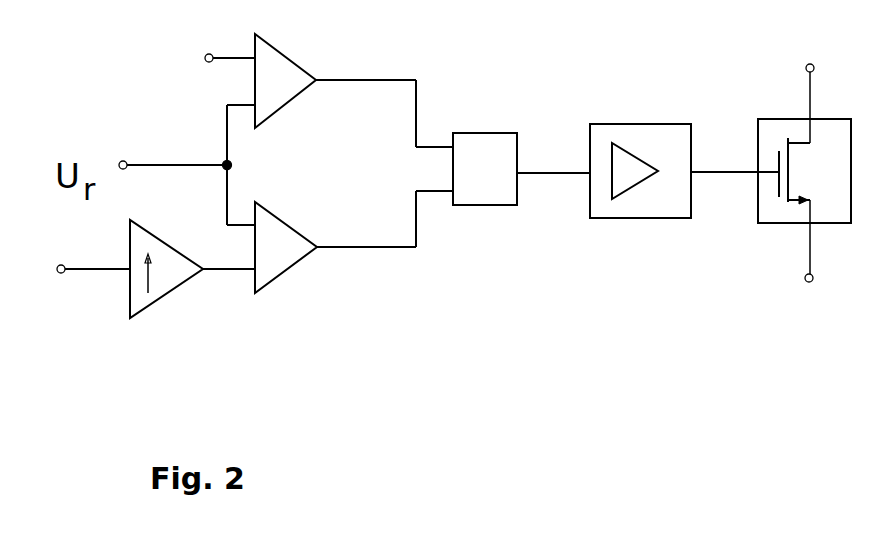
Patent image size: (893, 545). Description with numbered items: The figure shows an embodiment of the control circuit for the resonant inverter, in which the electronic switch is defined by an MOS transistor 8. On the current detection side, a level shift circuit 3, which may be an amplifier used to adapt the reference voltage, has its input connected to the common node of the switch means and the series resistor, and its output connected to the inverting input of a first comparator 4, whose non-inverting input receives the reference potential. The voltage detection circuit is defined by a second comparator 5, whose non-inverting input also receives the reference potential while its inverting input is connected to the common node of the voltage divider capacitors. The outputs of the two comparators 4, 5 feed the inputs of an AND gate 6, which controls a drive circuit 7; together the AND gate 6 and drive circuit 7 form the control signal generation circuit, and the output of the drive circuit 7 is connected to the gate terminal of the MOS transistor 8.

The level shift circuit 3 is at (167, 278).
The first comparator 4 is at (290, 245).
The second comparator 5 is at (290, 67).
The AND gate 6 is at (470, 143).
The drive circuit 7 is at (658, 128).
The MOS transistor 8 is at (772, 205).